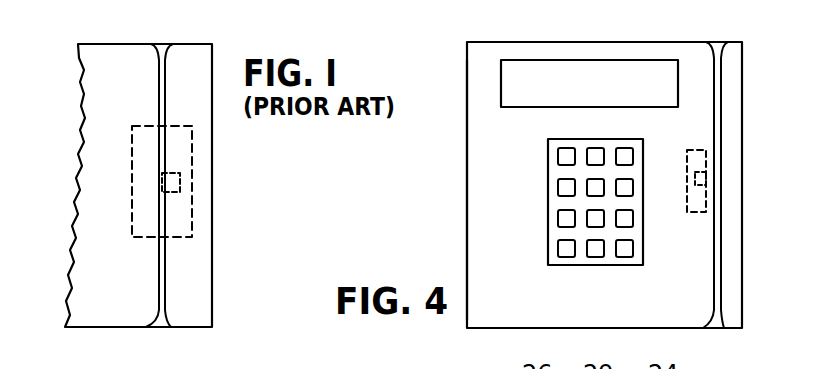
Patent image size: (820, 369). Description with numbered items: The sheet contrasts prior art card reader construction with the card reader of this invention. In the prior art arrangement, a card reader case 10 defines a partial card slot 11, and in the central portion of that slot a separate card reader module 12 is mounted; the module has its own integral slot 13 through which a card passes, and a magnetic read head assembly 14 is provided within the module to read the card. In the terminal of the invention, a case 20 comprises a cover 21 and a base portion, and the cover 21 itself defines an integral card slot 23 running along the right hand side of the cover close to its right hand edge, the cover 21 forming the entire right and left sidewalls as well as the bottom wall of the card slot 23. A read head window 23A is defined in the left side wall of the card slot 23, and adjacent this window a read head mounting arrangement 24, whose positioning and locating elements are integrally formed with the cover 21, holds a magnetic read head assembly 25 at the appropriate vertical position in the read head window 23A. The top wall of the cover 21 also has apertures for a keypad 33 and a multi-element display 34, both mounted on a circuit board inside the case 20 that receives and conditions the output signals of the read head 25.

In FIG. 1, the card reader case 10 is at (214, 277).
In FIG. 1, the partial card slot 11 is at (158, 320).
In FIG. 1, the card reader module 12 is at (194, 222).
In FIG. 1, the integral slot 13 is at (162, 199).
In FIG. 1, the magnetic read head assembly 14 is at (163, 175).
In FIG. 4, the case 20 is at (496, 329).
In FIG. 4, the cover 21 is at (473, 236).
In FIG. 4, the card slot 23 is at (714, 258).
In FIG. 4, the read head window 23A is at (702, 188).
In FIG. 4, the read head mounting arrangement 24 is at (702, 163).
In FIG. 4, the magnetic read head assembly 25 is at (712, 180).
In FIG. 4, the keypad 33 is at (555, 170).
In FIG. 4, the multi-element display 34 is at (645, 68).